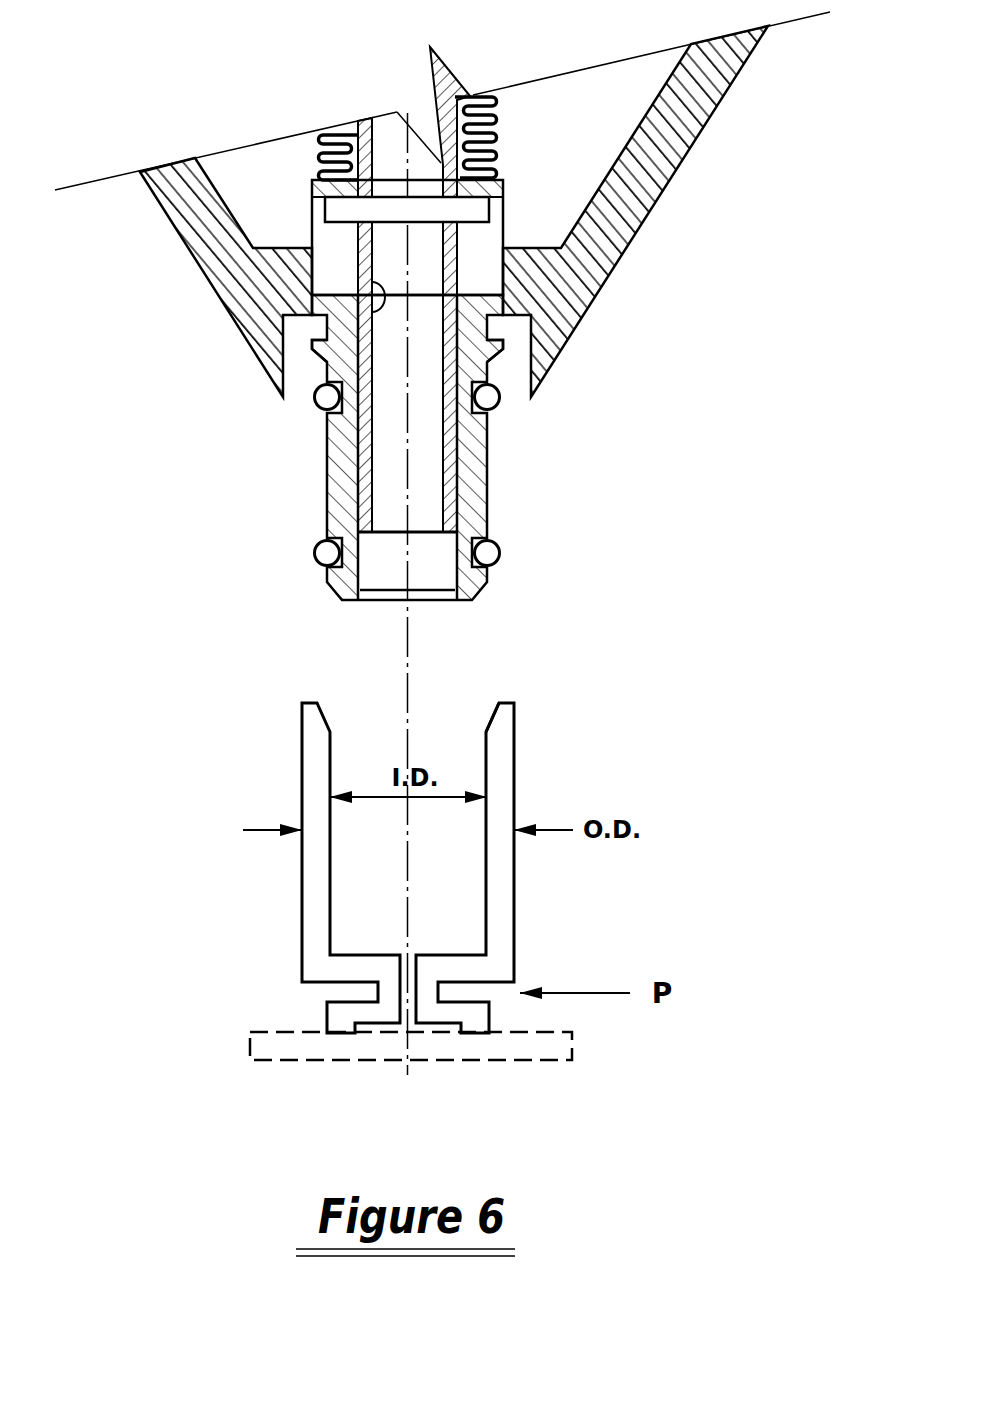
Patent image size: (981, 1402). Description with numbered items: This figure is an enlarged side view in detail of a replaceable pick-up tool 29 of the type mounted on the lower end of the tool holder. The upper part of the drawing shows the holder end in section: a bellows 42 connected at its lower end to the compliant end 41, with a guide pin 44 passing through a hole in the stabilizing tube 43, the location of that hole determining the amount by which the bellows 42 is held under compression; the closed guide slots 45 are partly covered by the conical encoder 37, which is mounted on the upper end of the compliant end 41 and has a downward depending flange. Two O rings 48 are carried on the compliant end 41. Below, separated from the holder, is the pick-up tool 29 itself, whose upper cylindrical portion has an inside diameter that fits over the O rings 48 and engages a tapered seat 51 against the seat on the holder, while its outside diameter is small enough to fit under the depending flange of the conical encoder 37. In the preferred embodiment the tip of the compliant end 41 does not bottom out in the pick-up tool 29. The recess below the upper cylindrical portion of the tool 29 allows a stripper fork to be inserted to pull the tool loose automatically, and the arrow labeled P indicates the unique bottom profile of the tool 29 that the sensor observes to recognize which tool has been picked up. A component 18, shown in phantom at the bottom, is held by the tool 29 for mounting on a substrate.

The component 18 is at (247, 1030).
The pick-up tool 29 is at (523, 902).
The conical encoder 37 is at (643, 202).
The compliant end 41 is at (477, 497).
The bellows 42 is at (333, 148).
The stabilizing tube 43 is at (320, 358).
The guide pin 44 is at (333, 207).
The closed guide slots 45 is at (327, 262).
The O rings 48 is at (322, 403).
The tapered seat 51 is at (488, 718).